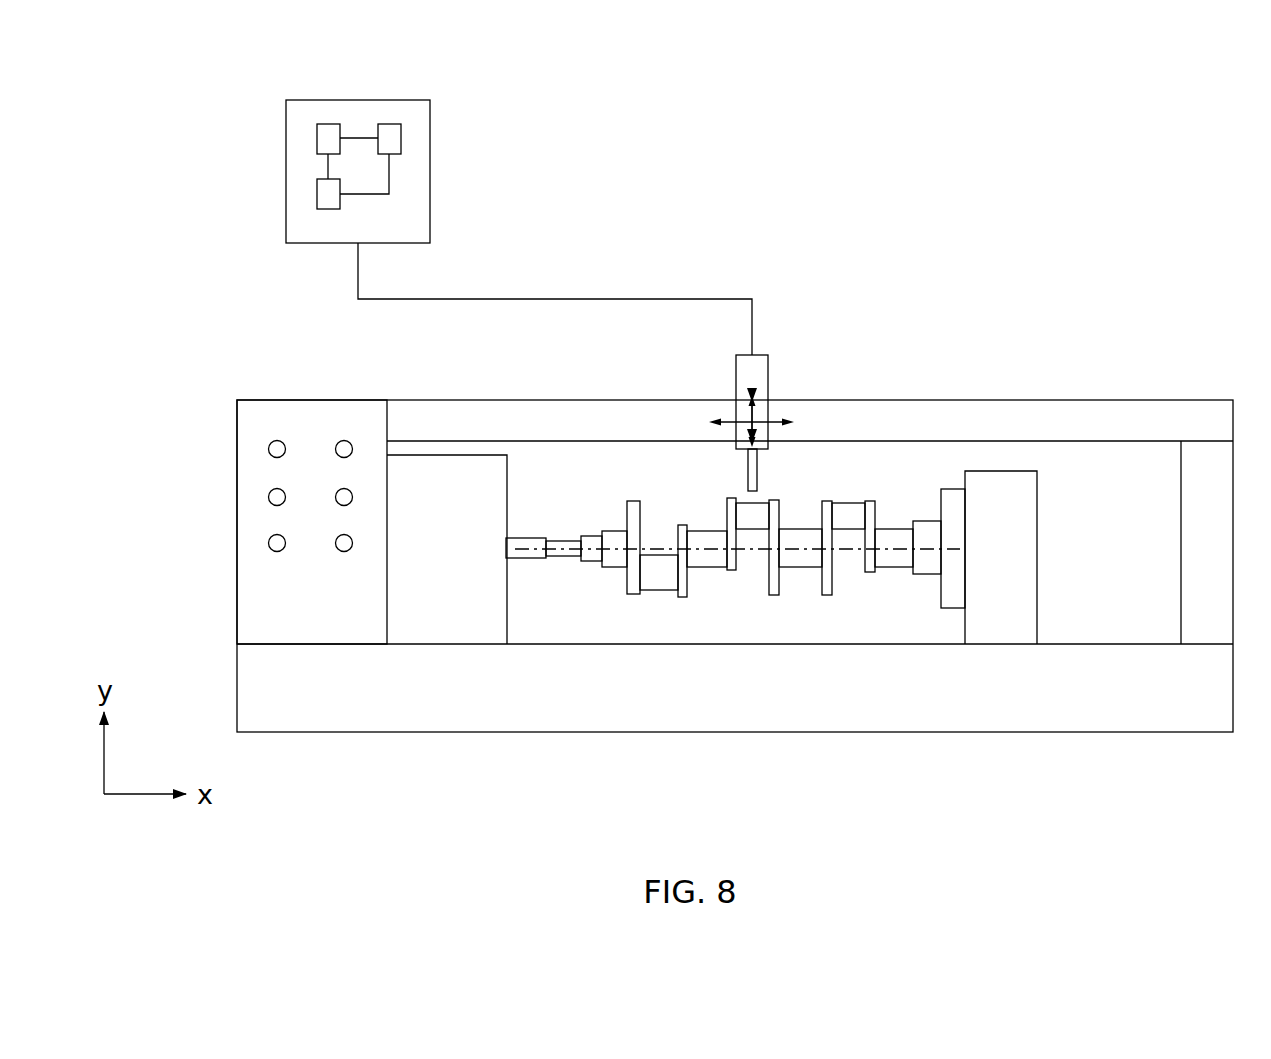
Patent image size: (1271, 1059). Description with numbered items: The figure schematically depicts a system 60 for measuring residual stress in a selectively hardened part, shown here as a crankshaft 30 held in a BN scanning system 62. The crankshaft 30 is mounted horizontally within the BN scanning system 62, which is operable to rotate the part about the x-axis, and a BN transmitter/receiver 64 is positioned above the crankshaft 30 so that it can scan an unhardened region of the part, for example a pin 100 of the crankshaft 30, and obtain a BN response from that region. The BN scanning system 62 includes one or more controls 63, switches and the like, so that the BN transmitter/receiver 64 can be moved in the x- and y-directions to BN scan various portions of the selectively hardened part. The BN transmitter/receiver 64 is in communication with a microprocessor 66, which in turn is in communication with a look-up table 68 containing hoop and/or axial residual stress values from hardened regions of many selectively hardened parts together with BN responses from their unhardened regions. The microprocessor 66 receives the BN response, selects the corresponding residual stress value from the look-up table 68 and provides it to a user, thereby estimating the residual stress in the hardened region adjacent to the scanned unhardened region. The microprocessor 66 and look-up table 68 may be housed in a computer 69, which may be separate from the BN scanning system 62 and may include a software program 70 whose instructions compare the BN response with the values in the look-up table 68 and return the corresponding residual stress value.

The crankshaft 30 is at (832, 603).
The system for measuring residual stress 60 is at (908, 176).
The BN scanning system 62 is at (256, 397).
The controls 63 is at (270, 540).
The BN transmitter/receiver 64 is at (758, 471).
The microprocessor 66 is at (317, 140).
The look-up table 68 is at (402, 138).
The computer 69 is at (432, 97).
The software program 70 is at (317, 194).
The pin 100 is at (752, 515).